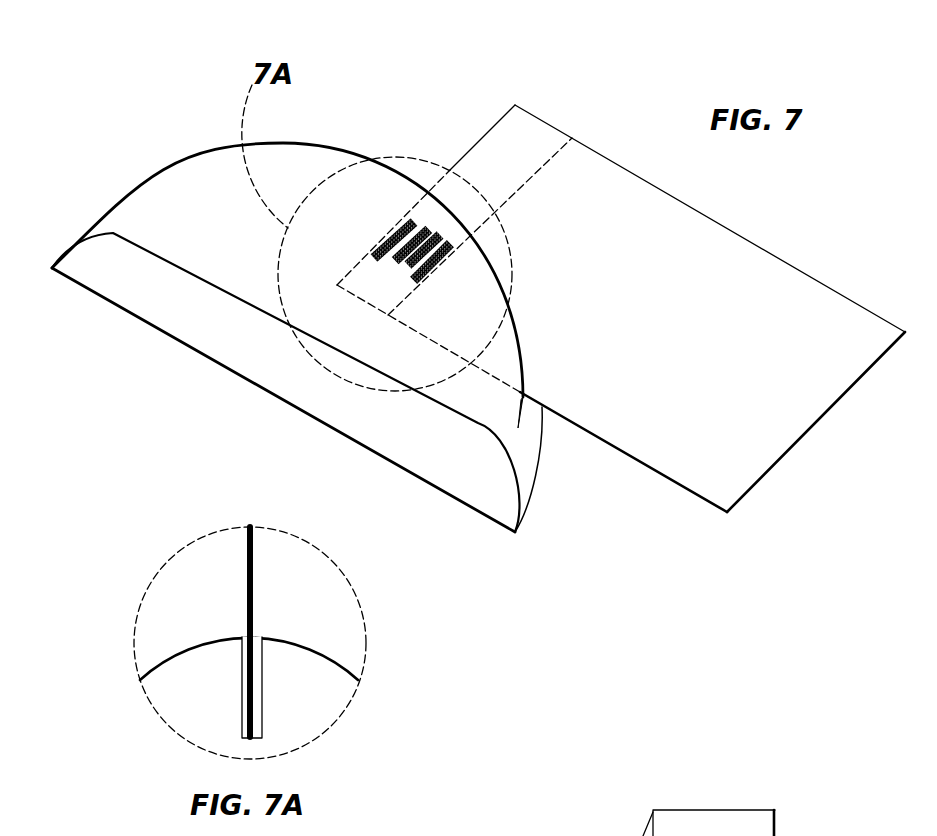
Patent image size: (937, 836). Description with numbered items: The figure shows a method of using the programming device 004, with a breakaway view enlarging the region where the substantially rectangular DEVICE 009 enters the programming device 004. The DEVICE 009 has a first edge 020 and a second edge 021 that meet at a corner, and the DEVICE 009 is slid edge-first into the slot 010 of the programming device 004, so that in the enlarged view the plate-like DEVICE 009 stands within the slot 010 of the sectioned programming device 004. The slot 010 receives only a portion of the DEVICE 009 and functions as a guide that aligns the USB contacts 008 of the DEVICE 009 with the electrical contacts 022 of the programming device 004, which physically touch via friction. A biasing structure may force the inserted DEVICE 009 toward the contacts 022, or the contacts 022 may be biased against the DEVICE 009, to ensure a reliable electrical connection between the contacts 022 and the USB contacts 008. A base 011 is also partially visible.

In FIG. 7, the programming device 004 is at (140, 186).
In FIG. 7A, the programming device 004 is at (312, 708).
In FIG. 7, the USB contacts 008 is at (422, 278).
In FIG. 7, the DEVICE 009 is at (745, 366).
In FIG. 7A, the DEVICE 009 is at (254, 563).
In FIG. 7A, the slot 010 is at (245, 636).
In FIG. 7A, the base 011 is at (695, 817).
In FIG. 7, the first edge 020 is at (478, 142).
In FIG. 7, the second edge 021 is at (652, 470).
In FIG. 7A, the electrical contacts 022 is at (250, 689).